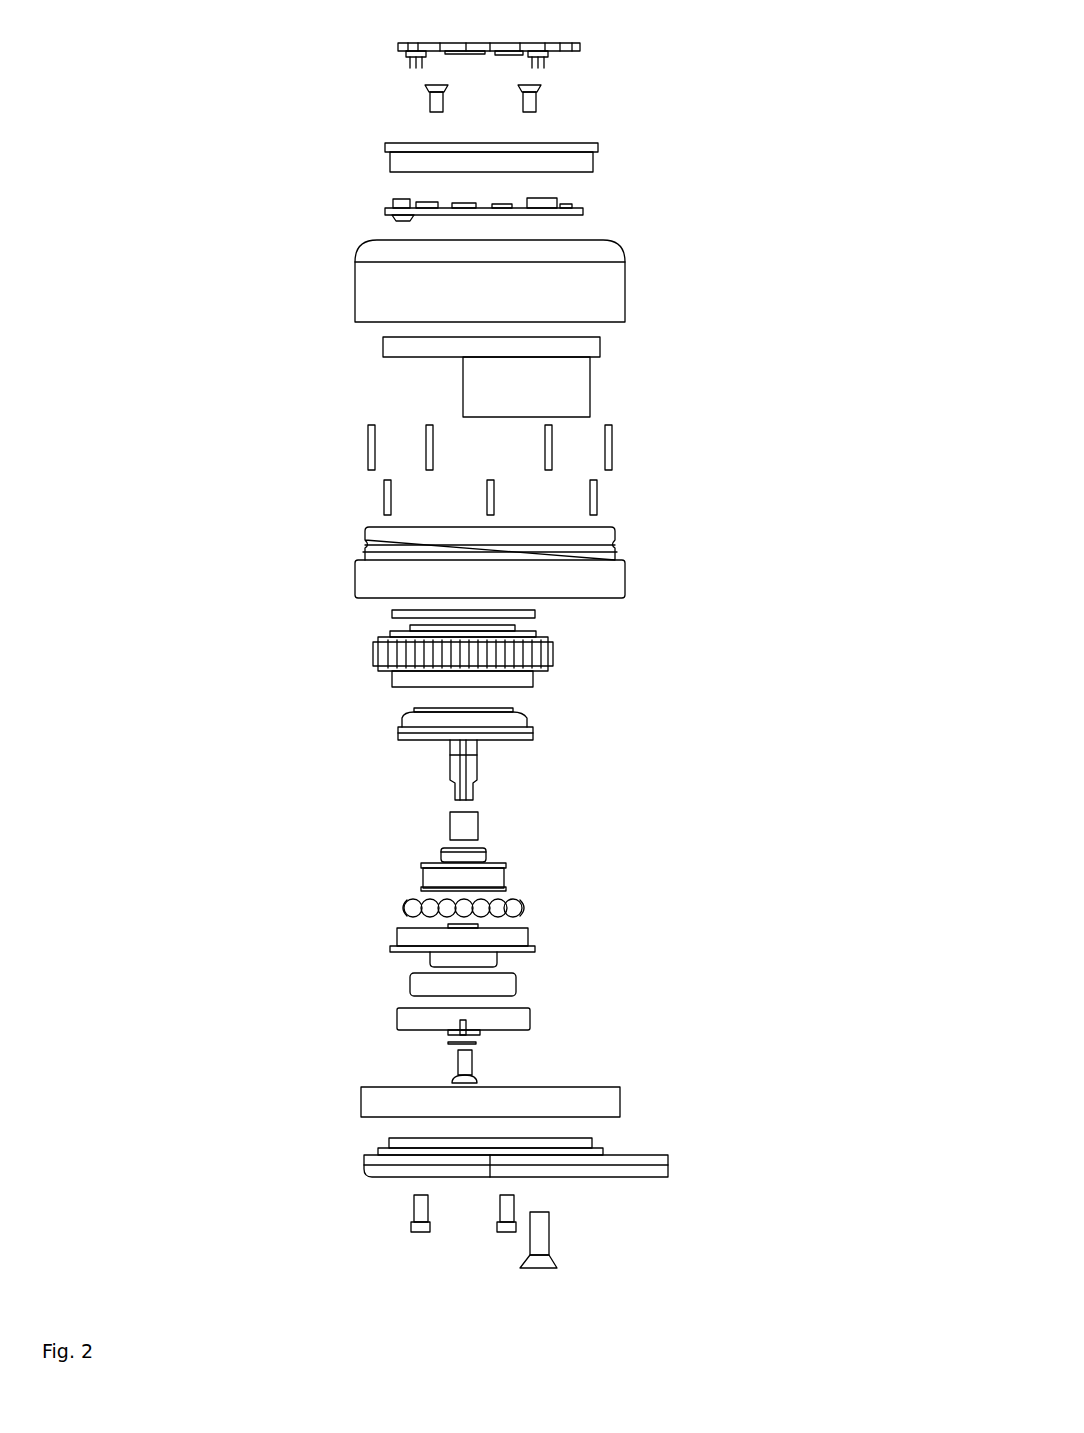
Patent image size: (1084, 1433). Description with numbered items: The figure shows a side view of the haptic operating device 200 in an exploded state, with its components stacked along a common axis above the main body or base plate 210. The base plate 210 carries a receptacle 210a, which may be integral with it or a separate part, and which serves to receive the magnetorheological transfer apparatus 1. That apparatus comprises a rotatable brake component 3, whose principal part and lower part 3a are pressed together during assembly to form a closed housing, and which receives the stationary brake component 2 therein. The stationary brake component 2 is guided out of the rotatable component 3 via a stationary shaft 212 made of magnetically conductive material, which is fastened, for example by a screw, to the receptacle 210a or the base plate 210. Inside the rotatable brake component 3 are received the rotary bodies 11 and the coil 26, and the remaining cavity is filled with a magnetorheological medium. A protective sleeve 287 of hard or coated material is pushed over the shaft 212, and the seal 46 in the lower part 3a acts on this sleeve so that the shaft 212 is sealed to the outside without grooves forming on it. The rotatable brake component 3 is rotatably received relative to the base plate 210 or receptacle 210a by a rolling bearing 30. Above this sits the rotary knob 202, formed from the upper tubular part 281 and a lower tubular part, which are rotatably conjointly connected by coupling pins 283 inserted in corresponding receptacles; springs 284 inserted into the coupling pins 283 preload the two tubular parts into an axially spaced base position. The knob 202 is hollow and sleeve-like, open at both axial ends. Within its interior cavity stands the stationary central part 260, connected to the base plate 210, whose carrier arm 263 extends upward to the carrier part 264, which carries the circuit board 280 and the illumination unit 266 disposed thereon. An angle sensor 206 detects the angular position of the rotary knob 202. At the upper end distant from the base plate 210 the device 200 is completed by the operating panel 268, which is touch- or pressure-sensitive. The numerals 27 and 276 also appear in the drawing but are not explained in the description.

The haptic operating device 200 is at (163, 57).
The operating panel 268 is at (580, 45).
The illumination unit 266 is at (598, 150).
The circuit board 280 is at (583, 210).
The connector 27 is at (395, 208).
The upper tubular part 281 is at (597, 285).
The rotary knob 202 is at (660, 548).
The carrier part 264 is at (590, 350).
The stationary central part 260 is at (636, 368).
The carrier arm 263 is at (582, 395).
The springs 284 is at (613, 445).
The coupling pins 283 is at (597, 492).
The angle sensor 206 is at (392, 613).
The rotatable brake component 3 is at (548, 655).
The magnetorheological transfer apparatus 1 is at (651, 711).
The stationary brake component 2 is at (400, 730).
The stationary shaft 212 is at (475, 755).
The protective sleeve 287 is at (480, 822).
The seal 46 is at (442, 851).
The coil 26 is at (510, 866).
The rotary bodies 11 is at (527, 906).
The lower part 3a is at (530, 936).
The rolling bearing 30 is at (520, 985).
The receptacle 210a is at (530, 1025).
The base plate 276 is at (620, 1097).
The base plate 210 is at (668, 1167).